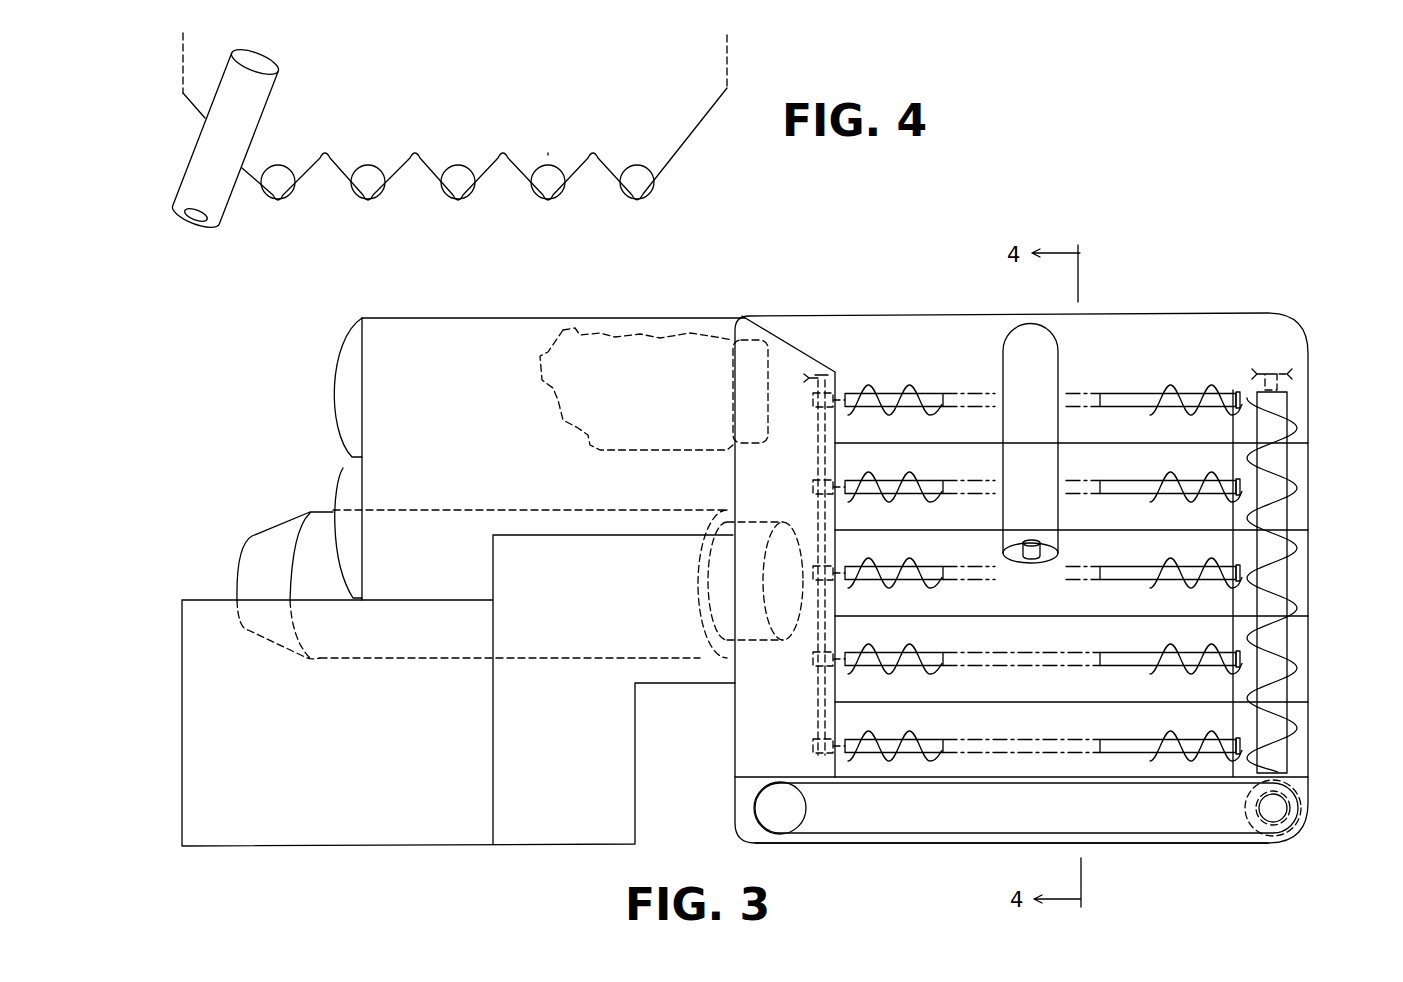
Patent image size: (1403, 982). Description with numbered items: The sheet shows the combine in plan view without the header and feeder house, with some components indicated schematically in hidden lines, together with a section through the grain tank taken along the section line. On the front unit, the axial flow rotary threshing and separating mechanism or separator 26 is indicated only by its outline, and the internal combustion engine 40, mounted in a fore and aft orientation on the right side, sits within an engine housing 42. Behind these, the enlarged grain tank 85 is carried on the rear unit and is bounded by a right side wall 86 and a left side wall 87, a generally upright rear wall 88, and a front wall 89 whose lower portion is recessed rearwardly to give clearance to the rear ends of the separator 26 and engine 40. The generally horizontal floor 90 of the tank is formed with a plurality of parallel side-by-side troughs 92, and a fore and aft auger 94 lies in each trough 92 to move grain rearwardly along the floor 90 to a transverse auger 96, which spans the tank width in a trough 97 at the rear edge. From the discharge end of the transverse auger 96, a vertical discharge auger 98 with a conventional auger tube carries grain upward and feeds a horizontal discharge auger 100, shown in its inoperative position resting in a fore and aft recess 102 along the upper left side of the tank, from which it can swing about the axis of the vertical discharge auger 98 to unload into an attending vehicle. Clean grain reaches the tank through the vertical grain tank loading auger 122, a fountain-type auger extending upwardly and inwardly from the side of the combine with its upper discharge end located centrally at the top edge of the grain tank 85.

In FIG. 3, the separator 26 is at (427, 506).
In FIG. 3, the engine 40 is at (650, 452).
In FIG. 3, the engine housing 42 is at (483, 318).
In FIG. 3, the grain tank 85 is at (1313, 571).
In FIG. 3, the right side wall 86 is at (1159, 313).
In FIG. 3, the left side wall 87 is at (1162, 838).
In FIG. 3, the rear wall 88 is at (1310, 644).
In FIG. 3, the front wall 89 is at (776, 703).
In FIG. 4, the floor 90 is at (484, 144).
In FIG. 3, the floor 90 is at (1027, 573).
In FIG. 4, the troughs 92 is at (609, 134).
In FIG. 3, the troughs 92 is at (953, 716).
In FIG. 4, the fore and aft auger 94 is at (552, 167).
In FIG. 3, the fore and aft auger 94 is at (928, 572).
In FIG. 3, the transverse auger 96 is at (1284, 512).
In FIG. 3, the trough 97 is at (1305, 537).
In FIG. 3, the vertical discharge auger 98 is at (1300, 806).
In FIG. 3, the horizontal discharge auger 100 is at (1028, 832).
In FIG. 3, the fore and aft recess 102 is at (942, 838).
In FIG. 4, the vertical grain tank loading auger 122 is at (263, 96).
In FIG. 3, the vertical grain tank loading auger 122 is at (1056, 513).